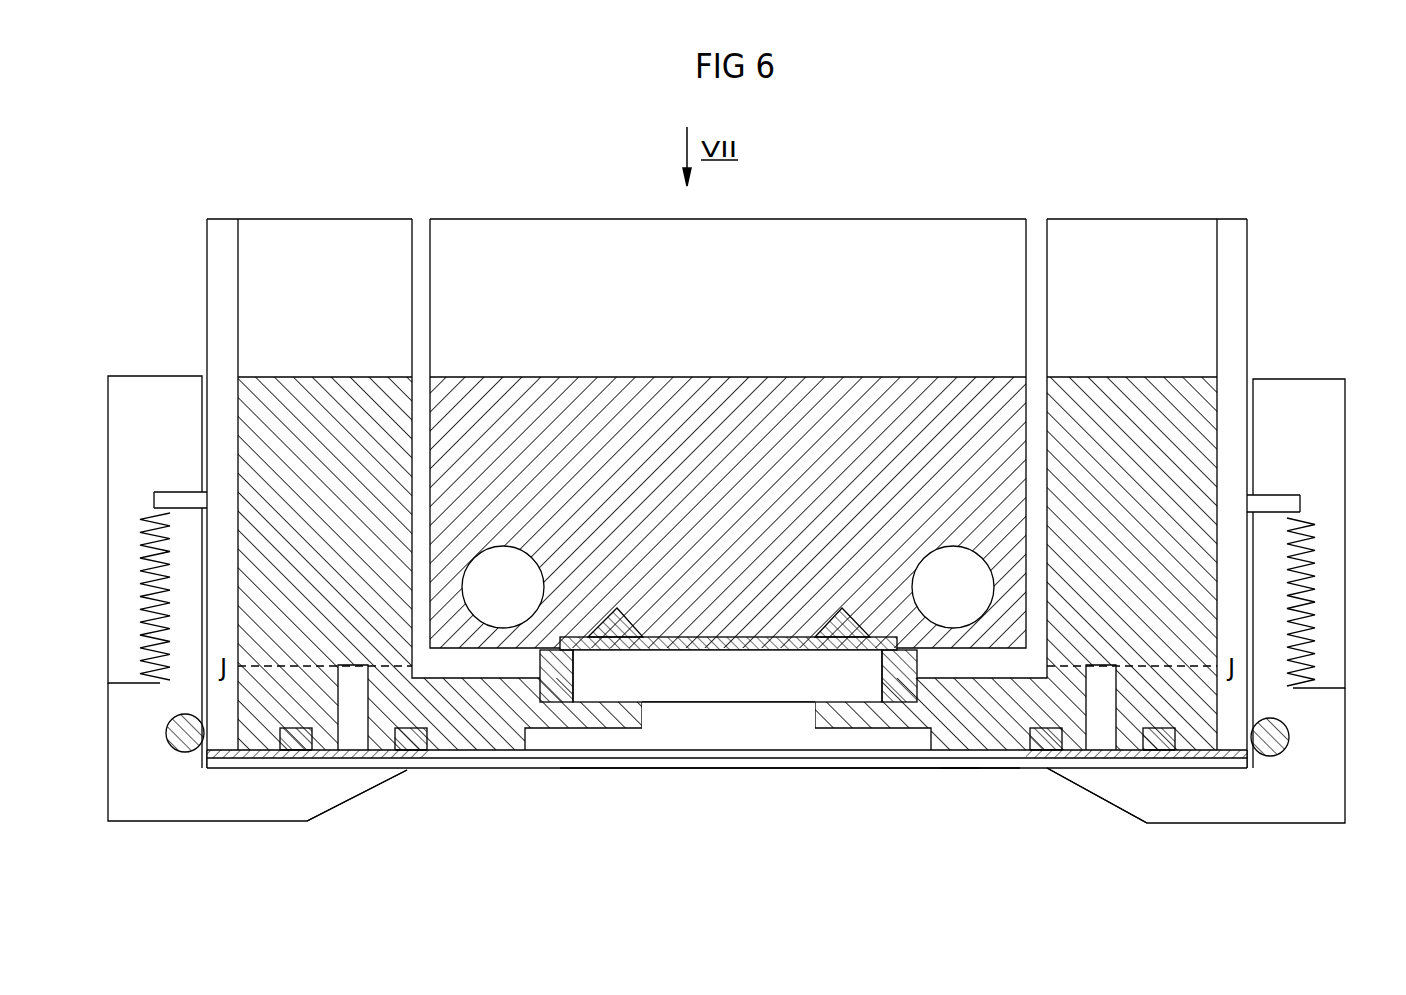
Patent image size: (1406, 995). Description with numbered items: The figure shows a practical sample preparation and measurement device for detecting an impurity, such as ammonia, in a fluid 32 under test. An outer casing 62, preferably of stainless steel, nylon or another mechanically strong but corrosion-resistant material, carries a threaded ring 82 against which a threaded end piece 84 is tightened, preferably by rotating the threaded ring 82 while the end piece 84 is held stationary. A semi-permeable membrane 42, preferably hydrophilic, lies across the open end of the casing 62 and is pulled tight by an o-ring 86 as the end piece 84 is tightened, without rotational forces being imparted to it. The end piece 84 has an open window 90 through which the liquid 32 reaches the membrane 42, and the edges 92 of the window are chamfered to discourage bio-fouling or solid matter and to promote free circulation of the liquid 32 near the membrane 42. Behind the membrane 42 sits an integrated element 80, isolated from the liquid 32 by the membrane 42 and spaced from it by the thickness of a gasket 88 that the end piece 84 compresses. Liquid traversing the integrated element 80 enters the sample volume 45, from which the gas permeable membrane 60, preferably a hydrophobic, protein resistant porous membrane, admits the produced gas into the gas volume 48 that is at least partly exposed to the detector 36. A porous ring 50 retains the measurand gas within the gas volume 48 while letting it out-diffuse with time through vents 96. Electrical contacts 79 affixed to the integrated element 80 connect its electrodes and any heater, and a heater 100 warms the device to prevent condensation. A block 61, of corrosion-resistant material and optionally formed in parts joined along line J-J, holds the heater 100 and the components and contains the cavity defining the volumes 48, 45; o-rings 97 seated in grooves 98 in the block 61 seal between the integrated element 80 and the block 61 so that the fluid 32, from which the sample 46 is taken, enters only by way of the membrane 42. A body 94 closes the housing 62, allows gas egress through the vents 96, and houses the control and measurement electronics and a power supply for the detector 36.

The fluid to be measured 32 is at (907, 846).
The detector 36 is at (718, 637).
The semi-permeable membrane 42 is at (759, 772).
The sample volume 45 is at (678, 725).
The sample 46 is at (712, 735).
The gas volume 48 is at (762, 693).
The porous ring 50 is at (575, 674).
The gas permeable membrane 60 is at (717, 702).
The block 61 is at (305, 377).
The outer casing 62 is at (1244, 265).
The electrical contacts 79 is at (355, 665).
The integrated element 80 is at (482, 758).
The threaded ring 82 is at (153, 376).
The threaded end piece 84 is at (106, 771).
The o-ring 86 is at (1286, 737).
The gasket 88 is at (1202, 770).
The open window 90 is at (965, 794).
The edges of the window 92 is at (357, 800).
The body 94 is at (741, 315).
The vents 96 is at (421, 219).
The o-rings 97 is at (293, 752).
The grooves 98 is at (294, 728).
The heater 100 is at (503, 546).